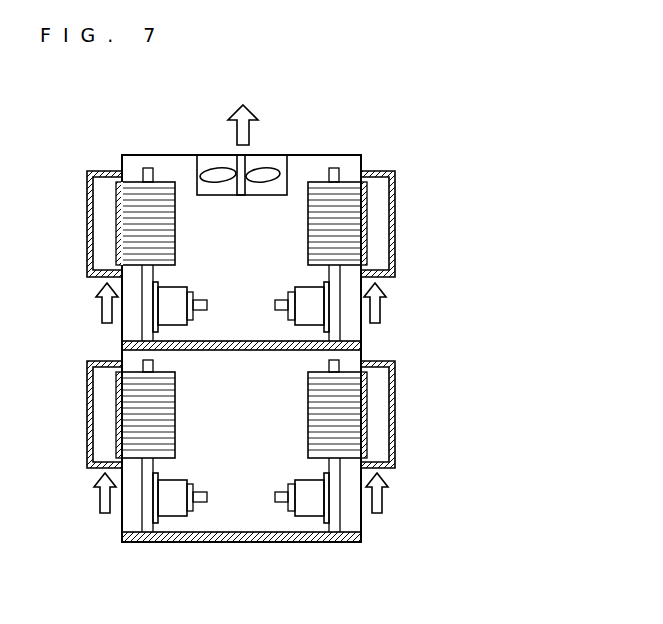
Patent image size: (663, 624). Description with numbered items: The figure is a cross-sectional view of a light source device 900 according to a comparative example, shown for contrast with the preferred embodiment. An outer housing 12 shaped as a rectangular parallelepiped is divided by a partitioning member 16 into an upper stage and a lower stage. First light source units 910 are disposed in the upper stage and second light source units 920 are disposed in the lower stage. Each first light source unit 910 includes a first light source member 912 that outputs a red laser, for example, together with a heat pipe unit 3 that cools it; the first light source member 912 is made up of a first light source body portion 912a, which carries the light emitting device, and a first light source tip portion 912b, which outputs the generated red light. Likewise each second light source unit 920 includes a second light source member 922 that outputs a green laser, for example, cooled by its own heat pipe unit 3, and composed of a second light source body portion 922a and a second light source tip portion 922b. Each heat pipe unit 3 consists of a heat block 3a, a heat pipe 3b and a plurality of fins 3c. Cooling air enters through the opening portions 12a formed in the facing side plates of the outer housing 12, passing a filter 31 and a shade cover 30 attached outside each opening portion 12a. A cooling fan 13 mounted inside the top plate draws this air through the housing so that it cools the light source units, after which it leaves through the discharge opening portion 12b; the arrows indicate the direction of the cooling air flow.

The outer housing 12 is at (177, 155).
The opening portion 12a is at (116, 257).
The discharge opening portion 12b is at (273, 155).
The cooling fan 13 is at (220, 172).
The partitioning member 16 is at (122, 345).
The heat pipe unit 3 is at (384, 245).
The heat block 3a is at (382, 303).
The heat pipe 3b is at (337, 173).
The fins 3c is at (352, 210).
The shade cover 30 is at (87, 243).
The filter 31 is at (117, 205).
The light source device 900 is at (268, 141).
The first light source unit 910 is at (363, 151).
The first light source member 912 is at (389, 313).
The first light source body portion 912a is at (315, 298).
The first light source tip portion 912b is at (287, 303).
The second light source unit 920 is at (367, 552).
The second light source member 922 is at (389, 495).
The second light source body portion 922a is at (315, 496).
The second light source tip portion 922b is at (287, 497).